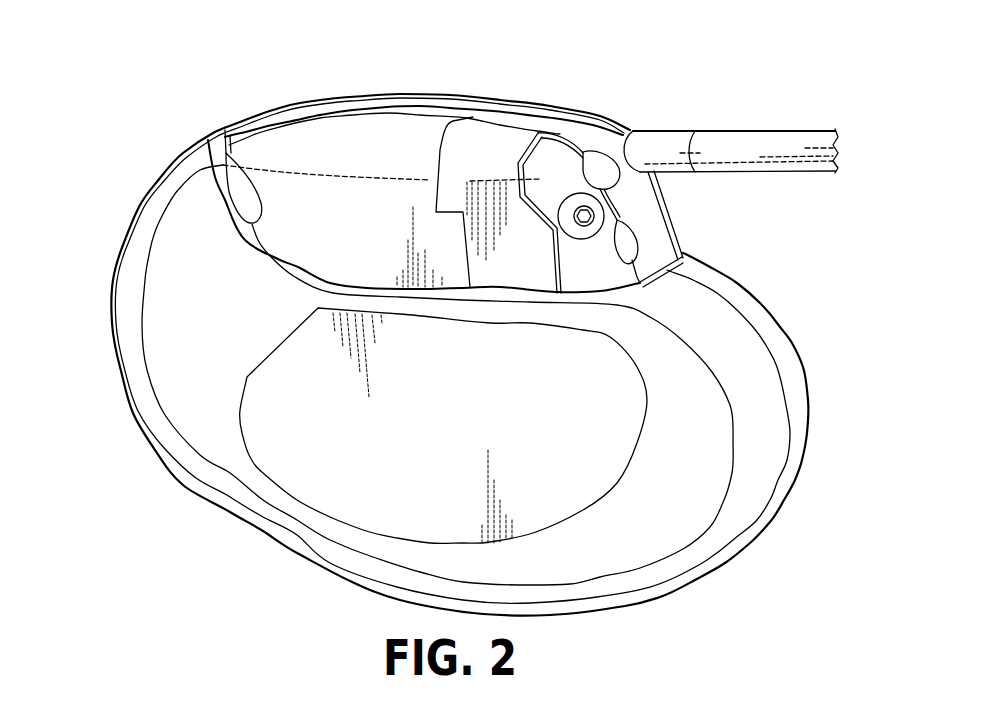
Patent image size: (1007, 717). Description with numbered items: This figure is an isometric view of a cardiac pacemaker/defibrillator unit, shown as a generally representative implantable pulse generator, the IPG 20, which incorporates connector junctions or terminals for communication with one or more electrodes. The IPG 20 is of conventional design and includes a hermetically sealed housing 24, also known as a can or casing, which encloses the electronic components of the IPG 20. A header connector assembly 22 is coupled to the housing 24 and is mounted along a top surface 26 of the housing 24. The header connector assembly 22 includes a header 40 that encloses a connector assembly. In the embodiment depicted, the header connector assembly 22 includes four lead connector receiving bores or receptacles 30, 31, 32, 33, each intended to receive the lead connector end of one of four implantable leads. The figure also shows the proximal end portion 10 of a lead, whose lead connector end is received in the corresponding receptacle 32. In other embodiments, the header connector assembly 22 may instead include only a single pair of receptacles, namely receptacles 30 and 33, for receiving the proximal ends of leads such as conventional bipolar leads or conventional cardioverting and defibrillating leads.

The proximal end portion of a lead 10 is at (716, 115).
The IPG 20 is at (214, 537).
The header connector assembly 22 is at (412, 62).
The housing 24 is at (150, 431).
The top surface 26 is at (208, 140).
The receptacle 30 is at (610, 170).
The receptacle 31 is at (665, 214).
The receptacle 32 is at (630, 162).
The receptacle 33 is at (638, 244).
The header 40 is at (455, 108).